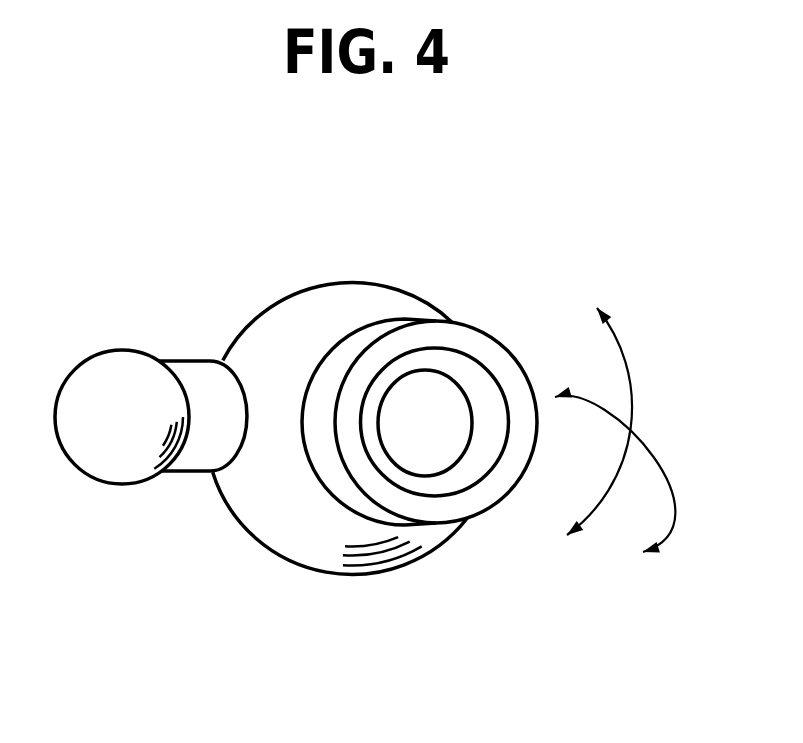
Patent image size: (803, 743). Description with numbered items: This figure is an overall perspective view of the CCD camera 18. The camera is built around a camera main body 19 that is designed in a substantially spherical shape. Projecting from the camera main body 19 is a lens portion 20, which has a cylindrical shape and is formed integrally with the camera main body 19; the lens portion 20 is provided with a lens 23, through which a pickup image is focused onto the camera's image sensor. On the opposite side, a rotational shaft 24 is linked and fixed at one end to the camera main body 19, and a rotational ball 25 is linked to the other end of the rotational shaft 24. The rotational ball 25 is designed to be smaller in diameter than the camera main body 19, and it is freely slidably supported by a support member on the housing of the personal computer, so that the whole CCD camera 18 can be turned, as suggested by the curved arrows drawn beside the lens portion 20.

The CCD camera 18 is at (437, 200).
The camera main body 19 is at (328, 300).
The lens portion 20 is at (463, 332).
The lens 23 is at (443, 403).
The rotational shaft 24 is at (205, 372).
The rotational ball 25 is at (120, 373).